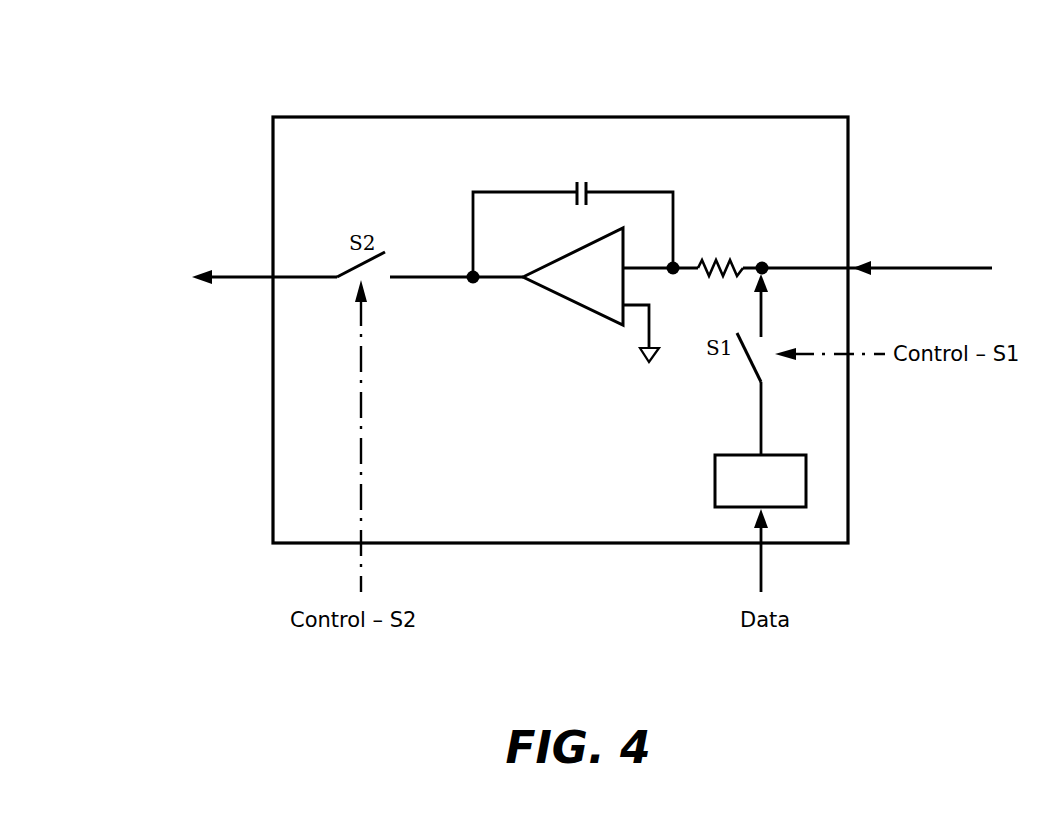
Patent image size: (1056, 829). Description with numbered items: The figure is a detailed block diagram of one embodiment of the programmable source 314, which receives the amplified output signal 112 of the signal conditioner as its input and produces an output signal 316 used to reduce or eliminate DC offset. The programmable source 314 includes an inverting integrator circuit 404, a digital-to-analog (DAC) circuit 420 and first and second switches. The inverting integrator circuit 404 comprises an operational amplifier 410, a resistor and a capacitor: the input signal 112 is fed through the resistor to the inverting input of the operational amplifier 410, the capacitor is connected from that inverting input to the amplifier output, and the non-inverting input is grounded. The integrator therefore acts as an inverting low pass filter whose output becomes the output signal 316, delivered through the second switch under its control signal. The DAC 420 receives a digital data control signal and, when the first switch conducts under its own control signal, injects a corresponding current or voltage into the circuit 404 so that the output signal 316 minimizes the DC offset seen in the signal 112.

The programmable source 314 is at (398, 115).
The output signal 316 is at (235, 277).
The inverting integrator circuit 404 is at (627, 253).
The operational amplifier 410 is at (565, 302).
The amplified output signal 112 is at (928, 268).
The digital-to-analog (DAC) circuit 420 is at (713, 470).